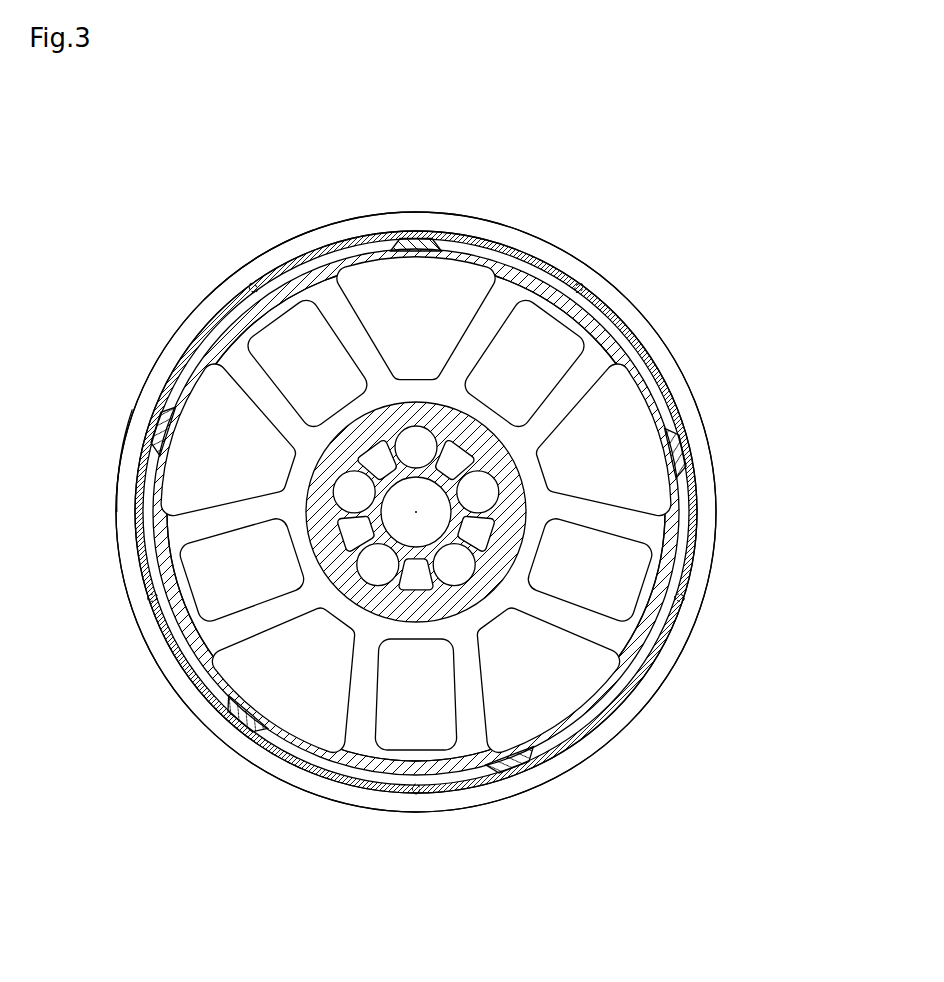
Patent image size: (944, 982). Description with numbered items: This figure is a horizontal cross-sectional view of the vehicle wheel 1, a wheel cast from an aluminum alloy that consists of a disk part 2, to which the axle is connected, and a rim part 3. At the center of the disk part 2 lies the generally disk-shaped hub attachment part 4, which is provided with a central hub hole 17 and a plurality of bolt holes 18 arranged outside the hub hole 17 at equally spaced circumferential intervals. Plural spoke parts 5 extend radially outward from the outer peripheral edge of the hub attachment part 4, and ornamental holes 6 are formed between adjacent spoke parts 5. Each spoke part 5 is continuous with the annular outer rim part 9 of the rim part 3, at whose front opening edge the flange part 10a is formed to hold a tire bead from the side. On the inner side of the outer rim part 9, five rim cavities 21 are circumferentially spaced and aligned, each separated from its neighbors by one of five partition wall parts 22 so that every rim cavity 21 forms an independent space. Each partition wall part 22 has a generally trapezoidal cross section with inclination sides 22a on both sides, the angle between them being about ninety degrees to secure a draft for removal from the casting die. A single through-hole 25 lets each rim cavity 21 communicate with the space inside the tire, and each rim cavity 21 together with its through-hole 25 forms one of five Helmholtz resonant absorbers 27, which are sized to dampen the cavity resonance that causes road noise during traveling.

The vehicle wheel 1 is at (684, 137).
The disk part 2 is at (222, 521).
The rim part 3 is at (672, 362).
The hub attachment part 4 is at (380, 610).
The spoke parts 5 is at (332, 308).
The ornamental holes 6 is at (470, 280).
The outer rim part 9 is at (176, 332).
The flange part 10a is at (270, 253).
The hub hole 17 is at (430, 524).
The bolt holes 18 is at (417, 447).
The rim cavities 21 is at (205, 322).
The partition wall parts 22 is at (405, 232).
The inclination sides 22a is at (390, 230).
The through-hole 25 is at (256, 295).
The Helmholtz resonant absorbers 27 is at (95, 165).